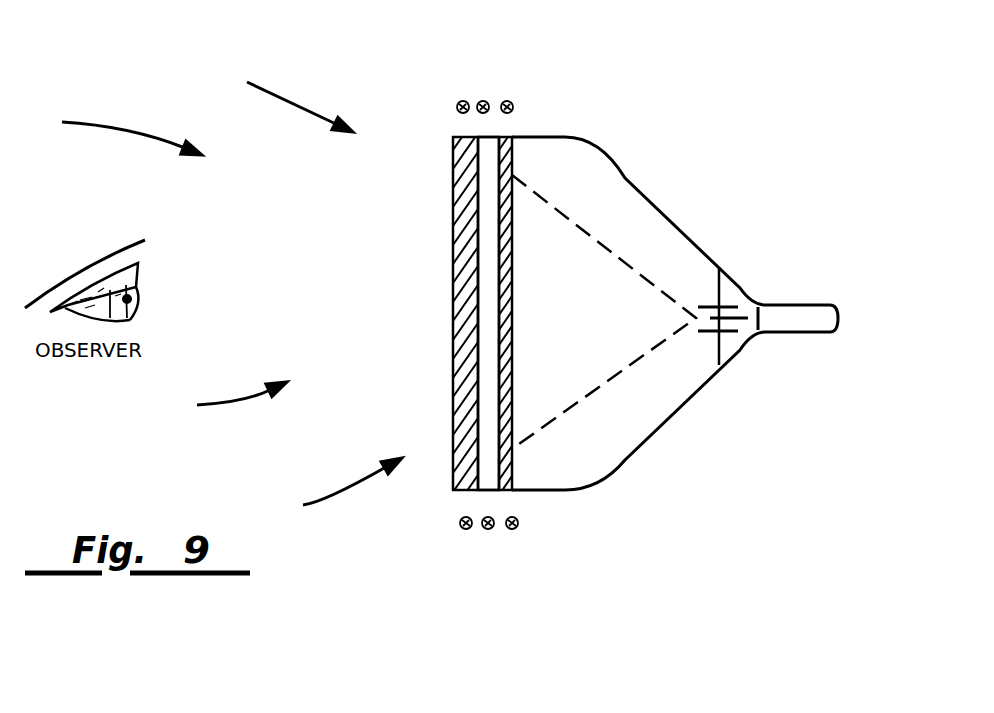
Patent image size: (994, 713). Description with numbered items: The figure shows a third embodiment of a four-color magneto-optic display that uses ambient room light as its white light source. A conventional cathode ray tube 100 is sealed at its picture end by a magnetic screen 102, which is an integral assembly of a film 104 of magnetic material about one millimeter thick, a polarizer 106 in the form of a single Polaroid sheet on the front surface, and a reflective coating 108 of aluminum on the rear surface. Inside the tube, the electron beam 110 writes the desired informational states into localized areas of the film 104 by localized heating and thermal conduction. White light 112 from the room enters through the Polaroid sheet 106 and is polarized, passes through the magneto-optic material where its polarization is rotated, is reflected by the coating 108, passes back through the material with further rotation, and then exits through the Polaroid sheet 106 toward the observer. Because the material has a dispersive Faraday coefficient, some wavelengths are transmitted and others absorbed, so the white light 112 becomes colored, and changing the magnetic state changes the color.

The cathode ray tube 100 is at (677, 219).
The magnetic screen 102 is at (453, 300).
The film of magnetic material 104 is at (487, 137).
The polarizer 106 is at (468, 137).
The reflective coating 108 is at (512, 156).
The electron beam 110 is at (572, 223).
The white light 112 is at (130, 132).